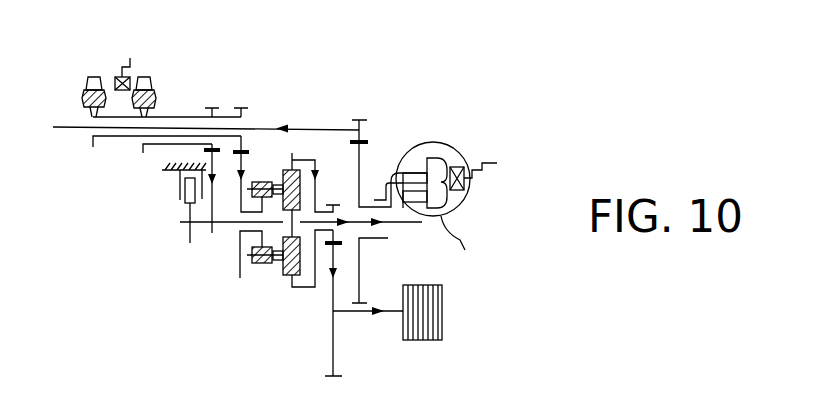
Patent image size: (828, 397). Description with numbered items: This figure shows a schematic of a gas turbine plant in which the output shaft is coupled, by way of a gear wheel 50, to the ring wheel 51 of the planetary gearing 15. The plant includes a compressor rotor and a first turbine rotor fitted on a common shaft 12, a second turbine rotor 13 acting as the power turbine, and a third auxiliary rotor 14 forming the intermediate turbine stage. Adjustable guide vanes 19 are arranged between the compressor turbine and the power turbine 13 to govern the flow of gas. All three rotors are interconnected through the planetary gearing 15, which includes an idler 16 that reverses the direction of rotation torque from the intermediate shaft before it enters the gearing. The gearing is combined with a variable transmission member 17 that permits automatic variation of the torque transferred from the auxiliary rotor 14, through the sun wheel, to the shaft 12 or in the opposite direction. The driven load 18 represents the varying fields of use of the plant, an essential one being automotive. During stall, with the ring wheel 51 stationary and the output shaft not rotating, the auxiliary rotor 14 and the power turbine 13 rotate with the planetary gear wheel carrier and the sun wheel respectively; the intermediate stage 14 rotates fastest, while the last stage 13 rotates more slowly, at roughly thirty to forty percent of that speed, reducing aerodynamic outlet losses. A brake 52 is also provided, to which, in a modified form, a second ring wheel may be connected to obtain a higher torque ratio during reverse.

The shaft 12 is at (75, 128).
The second turbine rotor 13 is at (149, 85).
The third auxiliary rotor 14 is at (92, 77).
The planetary gearing 15 is at (271, 268).
The idler 16 is at (253, 147).
The variable transmission member 17 is at (437, 141).
The driven load 18 is at (423, 331).
The adjustable guide vanes 19 is at (131, 77).
The gear wheel 50 is at (330, 323).
The ring wheel 51 is at (300, 290).
The brake 52 is at (188, 213).